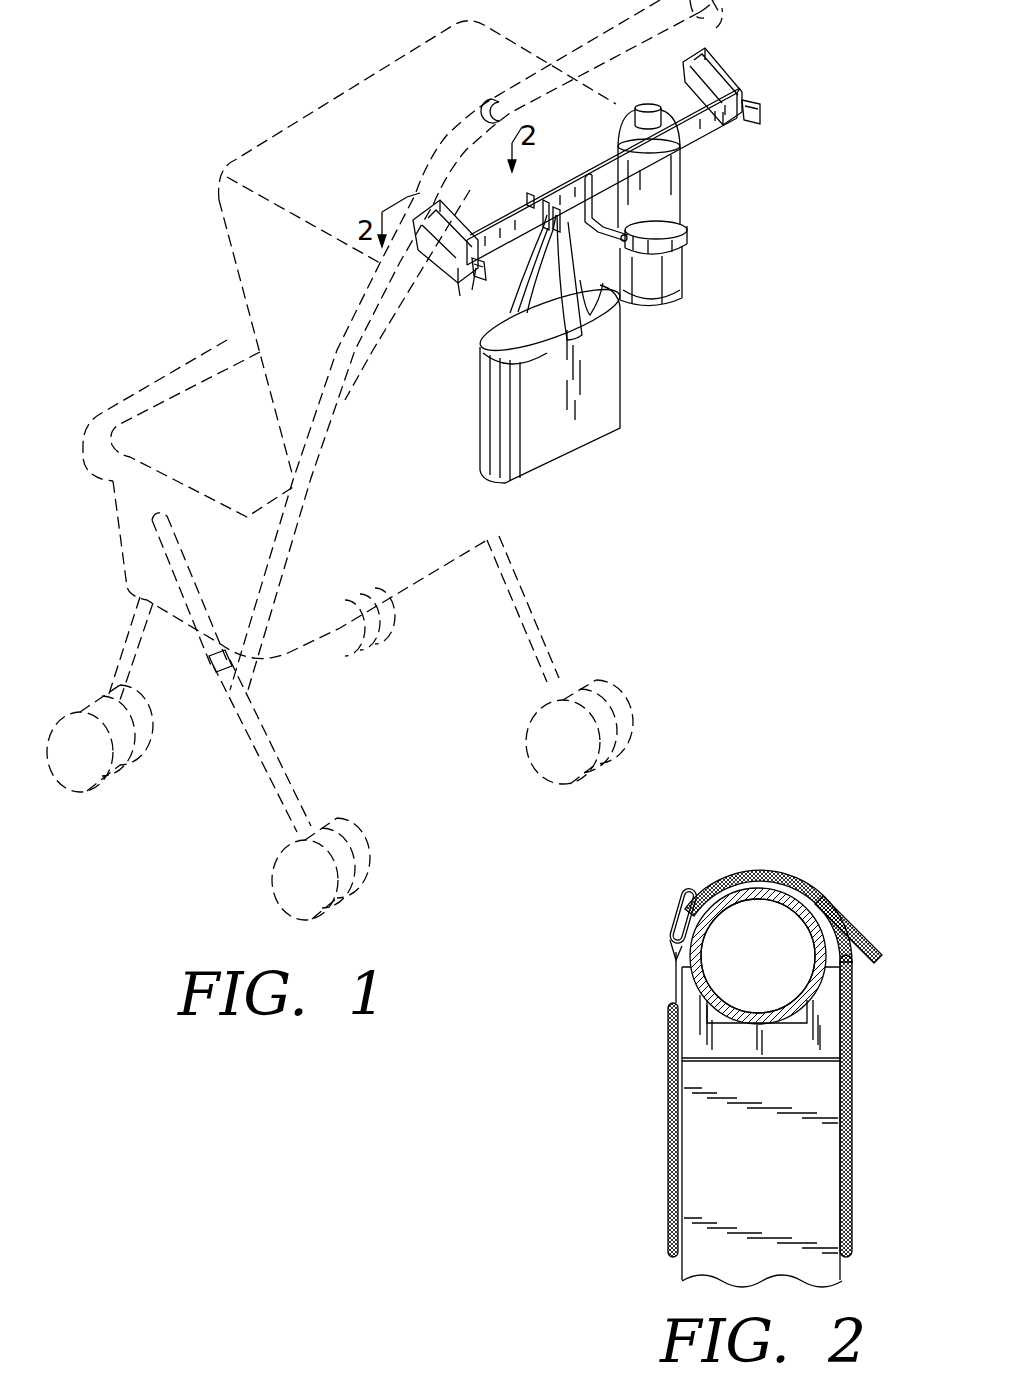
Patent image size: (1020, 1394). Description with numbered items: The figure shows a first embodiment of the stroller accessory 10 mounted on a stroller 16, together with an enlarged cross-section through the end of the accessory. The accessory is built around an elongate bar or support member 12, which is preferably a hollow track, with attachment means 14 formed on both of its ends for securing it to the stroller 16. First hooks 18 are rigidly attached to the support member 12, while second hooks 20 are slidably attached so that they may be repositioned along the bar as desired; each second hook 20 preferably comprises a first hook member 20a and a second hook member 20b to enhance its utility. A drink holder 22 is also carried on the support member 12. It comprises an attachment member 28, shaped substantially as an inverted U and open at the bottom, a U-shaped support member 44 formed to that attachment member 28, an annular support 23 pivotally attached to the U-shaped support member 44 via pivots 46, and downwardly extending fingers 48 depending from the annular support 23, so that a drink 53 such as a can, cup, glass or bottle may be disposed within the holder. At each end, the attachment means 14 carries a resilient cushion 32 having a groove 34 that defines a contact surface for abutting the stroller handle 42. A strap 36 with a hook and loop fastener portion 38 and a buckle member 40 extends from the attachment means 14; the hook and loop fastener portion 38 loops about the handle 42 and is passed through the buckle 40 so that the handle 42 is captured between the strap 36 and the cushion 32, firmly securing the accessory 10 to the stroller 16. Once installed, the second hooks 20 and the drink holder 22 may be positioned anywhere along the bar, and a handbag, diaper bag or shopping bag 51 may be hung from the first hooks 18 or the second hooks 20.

In FIG. 1, the stroller accessory 10 is at (764, 158).
In FIG. 1, the support member 12 is at (563, 172).
In FIG. 1, the attachment means 14 is at (728, 80).
In FIG. 2, the attachment means 14 is at (833, 1273).
In FIG. 1, the stroller 16 is at (152, 316).
In FIG. 1, the first hooks 18 is at (742, 116).
In FIG. 1, the second hooks 20 is at (543, 197).
In FIG. 1, the first hook member 20a is at (527, 196).
In FIG. 1, the second hook member 20b is at (540, 220).
In FIG. 1, the drink holder 22 is at (690, 223).
In FIG. 1, the annular support 23 is at (660, 220).
In FIG. 1, the attachment means of the drink holder 28 is at (603, 167).
In FIG. 2, the resilient cushion 32 is at (800, 1060).
In FIG. 2, the groove 34 is at (727, 1017).
In FIG. 1, the strap 36 is at (710, 62).
In FIG. 2, the strap 36 is at (795, 874).
In FIG. 2, the hook and loop fastener portion 38 is at (866, 970).
In FIG. 2, the buckle member 40 is at (677, 930).
In FIG. 1, the stroller handle 42 is at (717, 25).
In FIG. 2, the stroller handle 42 is at (712, 917).
In FIG. 1, the U-shaped support member 44 is at (605, 220).
In FIG. 1, the pivots 46 is at (643, 290).
In FIG. 1, the fingers 48 is at (680, 289).
In FIG. 1, the shopping bag 51 is at (565, 452).
In FIG. 1, the drink 53 is at (657, 264).